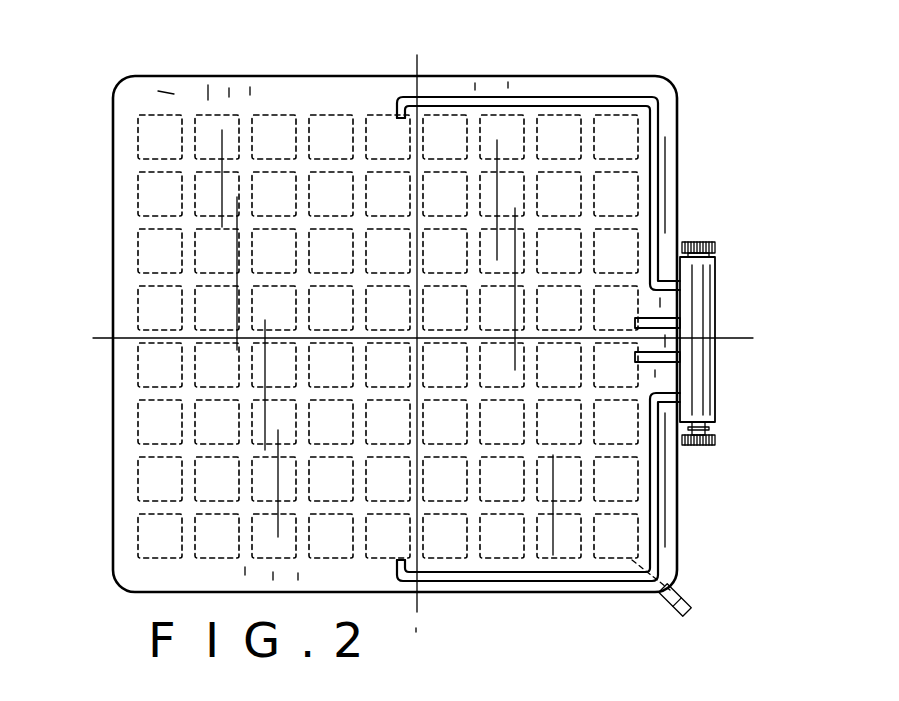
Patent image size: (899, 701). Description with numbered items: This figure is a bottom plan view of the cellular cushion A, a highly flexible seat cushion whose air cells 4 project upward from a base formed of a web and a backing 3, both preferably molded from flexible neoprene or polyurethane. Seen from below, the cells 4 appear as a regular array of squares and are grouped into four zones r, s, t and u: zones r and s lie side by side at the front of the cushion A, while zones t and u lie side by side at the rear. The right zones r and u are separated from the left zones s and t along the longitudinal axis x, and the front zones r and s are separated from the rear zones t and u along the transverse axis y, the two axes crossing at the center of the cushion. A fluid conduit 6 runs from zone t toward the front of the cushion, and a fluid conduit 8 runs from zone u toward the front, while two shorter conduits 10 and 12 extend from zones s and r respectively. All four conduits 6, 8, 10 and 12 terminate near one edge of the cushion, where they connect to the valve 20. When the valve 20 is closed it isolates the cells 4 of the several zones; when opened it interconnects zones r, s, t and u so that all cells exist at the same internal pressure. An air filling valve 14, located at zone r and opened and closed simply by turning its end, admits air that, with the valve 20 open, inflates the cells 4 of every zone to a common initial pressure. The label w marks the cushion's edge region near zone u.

The backing 3 is at (130, 574).
The air cells 4 is at (160, 196).
The fluid conduit 6 is at (612, 102).
The fluid conduit 8 is at (500, 575).
The conduit 10 is at (670, 323).
The conduit 12 is at (665, 357).
The air filling valve 14 is at (670, 587).
The valve 20 is at (703, 293).
The cellular cushion A is at (549, 56).
The longitudinal axis x is at (414, 336).
The transverse axis y is at (415, 330).
The zone t is at (165, 90).
The zone s is at (497, 88).
The zone u is at (127, 397).
The left wall w is at (112, 500).
The zone r is at (667, 510).